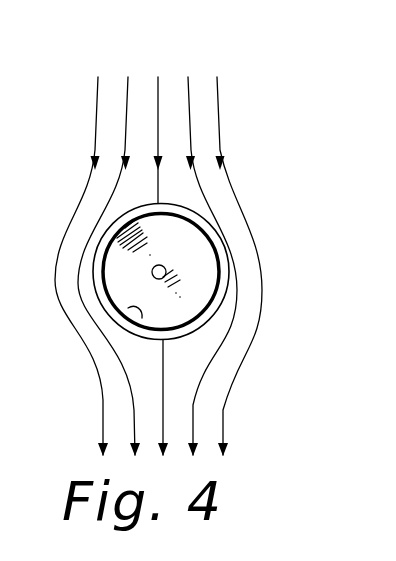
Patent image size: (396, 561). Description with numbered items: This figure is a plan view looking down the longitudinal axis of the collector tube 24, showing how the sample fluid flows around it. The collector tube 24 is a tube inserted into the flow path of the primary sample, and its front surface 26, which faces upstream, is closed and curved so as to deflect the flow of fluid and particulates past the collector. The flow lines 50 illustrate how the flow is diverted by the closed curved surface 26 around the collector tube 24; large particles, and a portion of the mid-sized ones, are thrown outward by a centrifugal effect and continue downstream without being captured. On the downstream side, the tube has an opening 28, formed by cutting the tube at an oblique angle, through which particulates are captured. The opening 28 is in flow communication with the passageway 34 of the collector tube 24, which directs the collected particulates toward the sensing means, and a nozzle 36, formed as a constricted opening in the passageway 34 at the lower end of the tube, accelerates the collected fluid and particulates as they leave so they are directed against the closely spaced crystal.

The flow lines 50 is at (218, 90).
The collector tube 24 is at (228, 287).
The front surface 26 is at (170, 199).
The opening 28 is at (186, 262).
The passageway 34 is at (128, 308).
The nozzle 36 is at (152, 273).